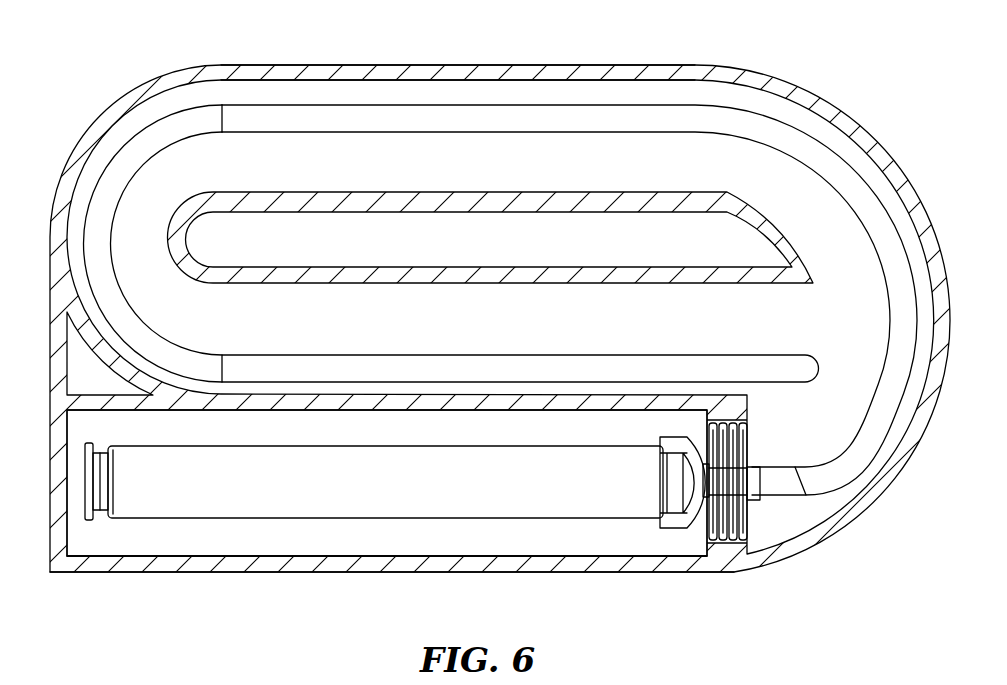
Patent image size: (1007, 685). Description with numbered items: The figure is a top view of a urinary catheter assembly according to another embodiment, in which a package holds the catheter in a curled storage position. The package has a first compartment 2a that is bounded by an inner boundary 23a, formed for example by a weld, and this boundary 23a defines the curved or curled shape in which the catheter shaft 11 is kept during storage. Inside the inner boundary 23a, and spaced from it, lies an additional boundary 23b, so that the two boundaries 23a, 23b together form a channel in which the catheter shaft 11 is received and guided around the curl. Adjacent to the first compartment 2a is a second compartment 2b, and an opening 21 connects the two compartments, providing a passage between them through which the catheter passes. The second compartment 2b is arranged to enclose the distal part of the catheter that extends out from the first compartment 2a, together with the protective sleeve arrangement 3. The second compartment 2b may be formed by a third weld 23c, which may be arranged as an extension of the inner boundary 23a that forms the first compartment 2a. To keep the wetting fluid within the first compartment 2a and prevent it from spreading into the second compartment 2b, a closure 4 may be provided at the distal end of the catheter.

The first compartment 2a is at (545, 92).
The second compartment 2b is at (270, 540).
The protective sleeve arrangement 3 is at (500, 500).
The closure 4 is at (87, 522).
The catheter shaft 11 is at (843, 160).
The opening 21 is at (692, 522).
The inner boundary 23a is at (790, 95).
The additional boundary 23b is at (325, 200).
The third weld 23c is at (177, 563).